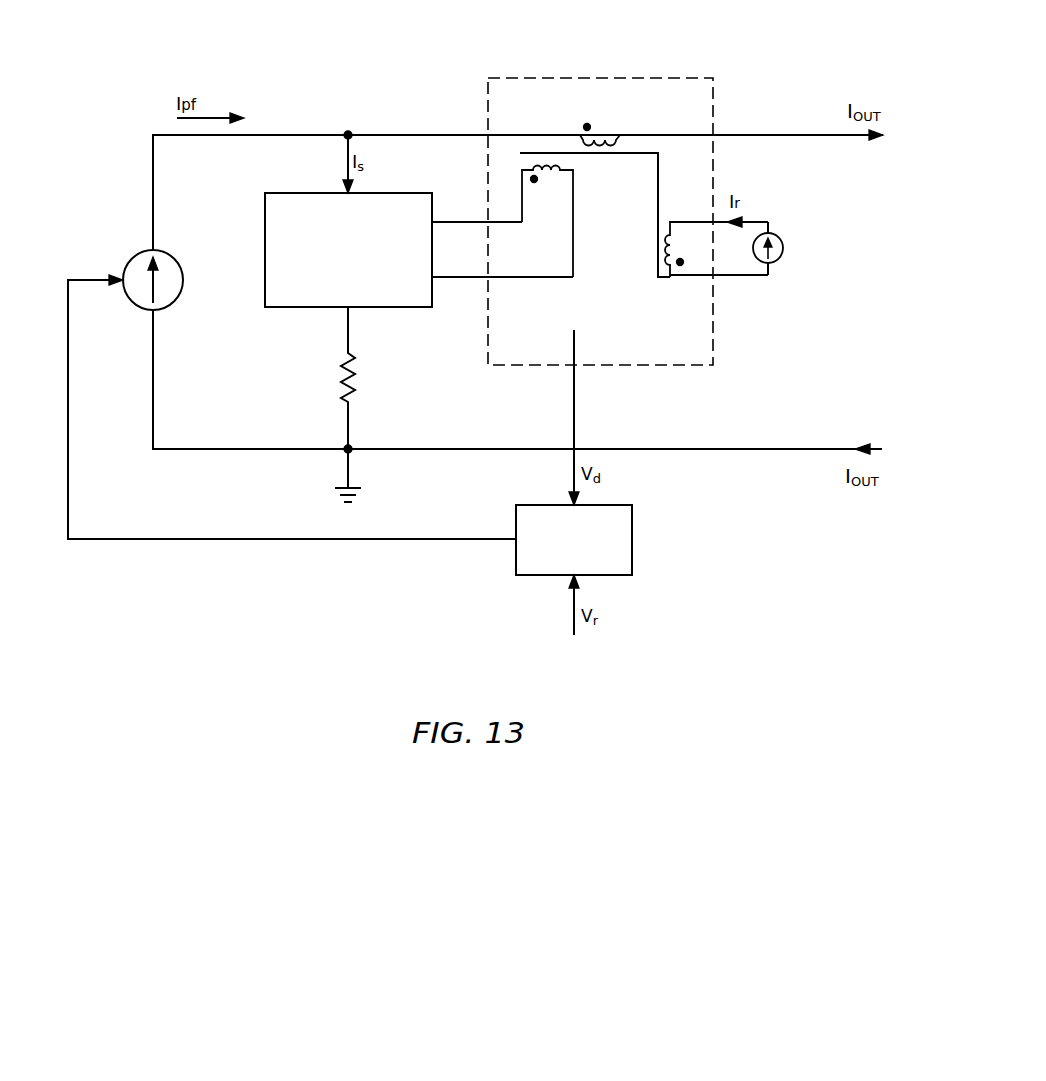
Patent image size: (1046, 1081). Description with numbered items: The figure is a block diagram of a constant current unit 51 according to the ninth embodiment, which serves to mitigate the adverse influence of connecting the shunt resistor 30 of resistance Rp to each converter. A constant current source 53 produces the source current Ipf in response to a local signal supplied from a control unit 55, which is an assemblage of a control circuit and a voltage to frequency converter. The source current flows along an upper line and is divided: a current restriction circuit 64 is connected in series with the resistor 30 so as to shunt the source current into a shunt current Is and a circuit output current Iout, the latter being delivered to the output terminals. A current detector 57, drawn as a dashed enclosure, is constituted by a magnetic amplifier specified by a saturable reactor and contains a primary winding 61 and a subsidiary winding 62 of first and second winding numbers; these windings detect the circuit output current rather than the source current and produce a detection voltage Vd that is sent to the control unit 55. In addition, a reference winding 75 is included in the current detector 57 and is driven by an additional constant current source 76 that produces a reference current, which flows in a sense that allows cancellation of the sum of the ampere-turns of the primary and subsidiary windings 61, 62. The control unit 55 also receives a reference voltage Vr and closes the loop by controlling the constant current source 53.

The shunt resistor 30 is at (357, 388).
The constant current unit 51 is at (270, 556).
The constant current source 53 is at (175, 262).
The control unit 55 is at (633, 545).
The current detector 57 is at (672, 78).
The primary winding 61 is at (600, 131).
The subsidiary winding 62 is at (554, 173).
The current restriction circuit 64 is at (290, 192).
The reference winding 75 is at (668, 280).
The additional constant current source 76 is at (785, 247).